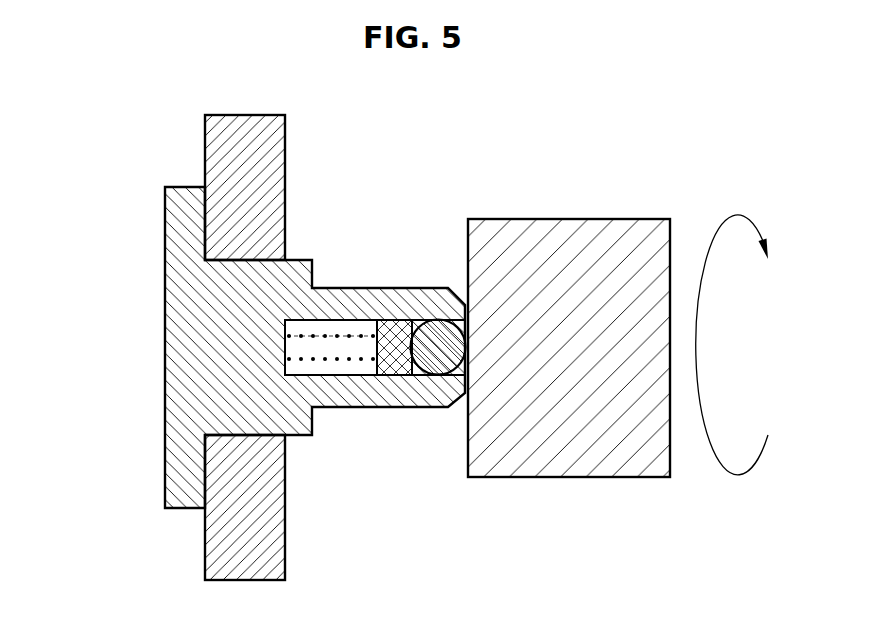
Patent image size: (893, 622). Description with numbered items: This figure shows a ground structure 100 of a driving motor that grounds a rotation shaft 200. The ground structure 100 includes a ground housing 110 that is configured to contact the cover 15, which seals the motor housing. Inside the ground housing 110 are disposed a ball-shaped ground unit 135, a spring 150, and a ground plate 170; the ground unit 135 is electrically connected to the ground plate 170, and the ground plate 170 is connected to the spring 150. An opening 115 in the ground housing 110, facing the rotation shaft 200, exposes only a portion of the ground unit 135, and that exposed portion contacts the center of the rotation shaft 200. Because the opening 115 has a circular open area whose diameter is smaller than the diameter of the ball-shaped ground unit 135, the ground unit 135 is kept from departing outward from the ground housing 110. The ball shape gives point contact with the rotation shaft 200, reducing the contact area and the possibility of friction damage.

The ground structure 100 is at (145, 166).
The ground housing 110 is at (173, 311).
The cover 15 is at (265, 197).
The opening 115 is at (432, 320).
The ball-shaped ground unit 135 is at (437, 362).
The spring 150 is at (313, 365).
The ground plate 170 is at (393, 362).
The rotation shaft 200 is at (540, 233).